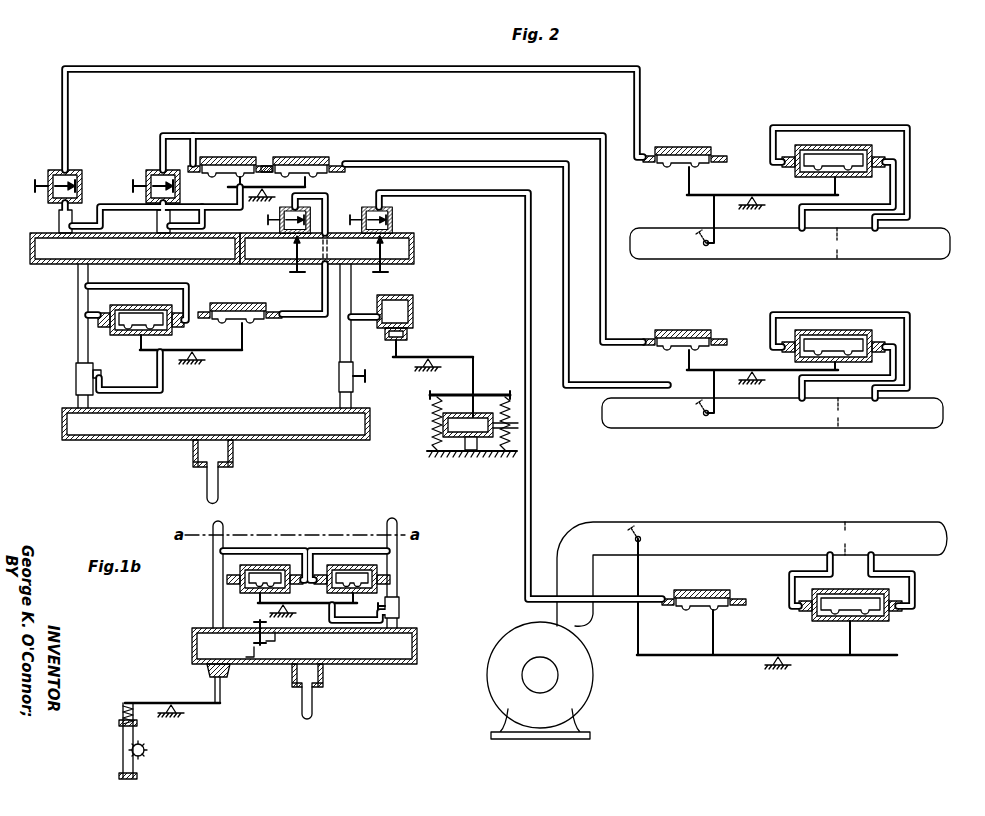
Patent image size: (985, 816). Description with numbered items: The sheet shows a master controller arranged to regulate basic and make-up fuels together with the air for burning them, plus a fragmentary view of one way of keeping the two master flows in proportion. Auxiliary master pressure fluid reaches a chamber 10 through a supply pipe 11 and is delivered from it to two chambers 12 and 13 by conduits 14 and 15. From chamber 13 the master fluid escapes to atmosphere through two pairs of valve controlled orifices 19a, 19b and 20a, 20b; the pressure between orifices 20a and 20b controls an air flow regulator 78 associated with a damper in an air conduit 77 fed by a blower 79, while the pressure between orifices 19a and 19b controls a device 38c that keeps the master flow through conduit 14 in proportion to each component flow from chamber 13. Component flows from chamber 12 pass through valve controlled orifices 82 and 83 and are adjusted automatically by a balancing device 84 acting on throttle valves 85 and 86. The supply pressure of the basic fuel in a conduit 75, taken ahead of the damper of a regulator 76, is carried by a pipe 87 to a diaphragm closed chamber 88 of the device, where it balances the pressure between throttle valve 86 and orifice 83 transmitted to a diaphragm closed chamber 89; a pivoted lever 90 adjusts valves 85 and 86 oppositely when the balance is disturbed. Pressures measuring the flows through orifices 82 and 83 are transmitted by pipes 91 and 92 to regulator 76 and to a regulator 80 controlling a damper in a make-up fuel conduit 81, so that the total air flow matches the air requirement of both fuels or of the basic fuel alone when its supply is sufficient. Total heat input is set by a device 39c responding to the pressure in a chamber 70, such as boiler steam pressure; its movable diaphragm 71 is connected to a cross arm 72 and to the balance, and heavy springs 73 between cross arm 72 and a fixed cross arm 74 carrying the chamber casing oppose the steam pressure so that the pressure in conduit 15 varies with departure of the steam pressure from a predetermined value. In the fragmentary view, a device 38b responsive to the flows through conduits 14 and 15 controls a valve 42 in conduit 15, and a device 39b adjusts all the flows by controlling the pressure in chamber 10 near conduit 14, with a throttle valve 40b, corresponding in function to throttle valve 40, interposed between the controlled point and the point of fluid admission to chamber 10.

In FIG. 2, the chamber 10 is at (216, 437).
In FIG. 1B, the chamber 10 is at (304, 657).
In FIG. 2, the supply pipe 11 is at (219, 490).
In FIG. 1B, the supply pipe 11 is at (313, 710).
In FIG. 2, the chamber 12 is at (135, 248).
In FIG. 2, the chamber 13 is at (327, 248).
In FIG. 2, the conduit 14 is at (78, 330).
In FIG. 1B, the conduit 14 is at (213, 591).
In FIG. 2, the conduit 15 is at (340, 337).
In FIG. 1B, the conduit 15 is at (397, 580).
In FIG. 2, the valve controlled orifice 19a is at (295, 242).
In FIG. 2, the valve controlled orifice 19b is at (316, 220).
In FIG. 2, the valve controlled orifice 20a is at (394, 240).
In FIG. 2, the valve controlled orifice 20b is at (394, 218).
In FIG. 1B, the device 38b is at (310, 606).
In FIG. 2, the device 38c is at (218, 352).
In FIG. 1B, the device 39b is at (141, 703).
In FIG. 2, the device 39c is at (443, 357).
In FIG. 2, the throttle valve 40 is at (76, 377).
In FIG. 1B, the throttle valve 40b is at (264, 658).
In FIG. 2, the valve 42 is at (339, 370).
In FIG. 1B, the valve 42 is at (400, 606).
In FIG. 2, the chamber 70 is at (462, 430).
In FIG. 2, the movable diaphragm 71 is at (456, 409).
In FIG. 2, the cross arm 72 is at (499, 395).
In FIG. 2, the heavy springs 73 is at (432, 443).
In FIG. 2, the fixed cross arm 74 is at (482, 455).
In FIG. 2, the conduit 75 is at (936, 398).
In FIG. 2, the regulator 76 is at (736, 368).
In FIG. 2, the conduit 77 is at (905, 522).
In FIG. 2, the regulator 78 is at (808, 657).
In FIG. 2, the blower 79 is at (588, 703).
In FIG. 2, the regulator 80 is at (736, 193).
In FIG. 2, the conduit 81 is at (936, 228).
In FIG. 2, the valve controlled orifice 82 is at (84, 178).
In FIG. 2, the valve controlled orifice 83 is at (181, 186).
In FIG. 2, the balancing device 84 is at (272, 185).
In FIG. 2, the throttle valve 85 is at (59, 222).
In FIG. 2, the throttle valve 86 is at (157, 227).
In FIG. 2, the pipe 87 is at (567, 392).
In FIG. 2, the diaphragm closed chamber 88 is at (310, 159).
In FIG. 2, the diaphragm closed chamber 89 is at (212, 159).
In FIG. 2, the pivoted lever 90 is at (110, 207).
In FIG. 2, the pipe 91 is at (180, 67).
In FIG. 2, the pipe 92 is at (607, 299).